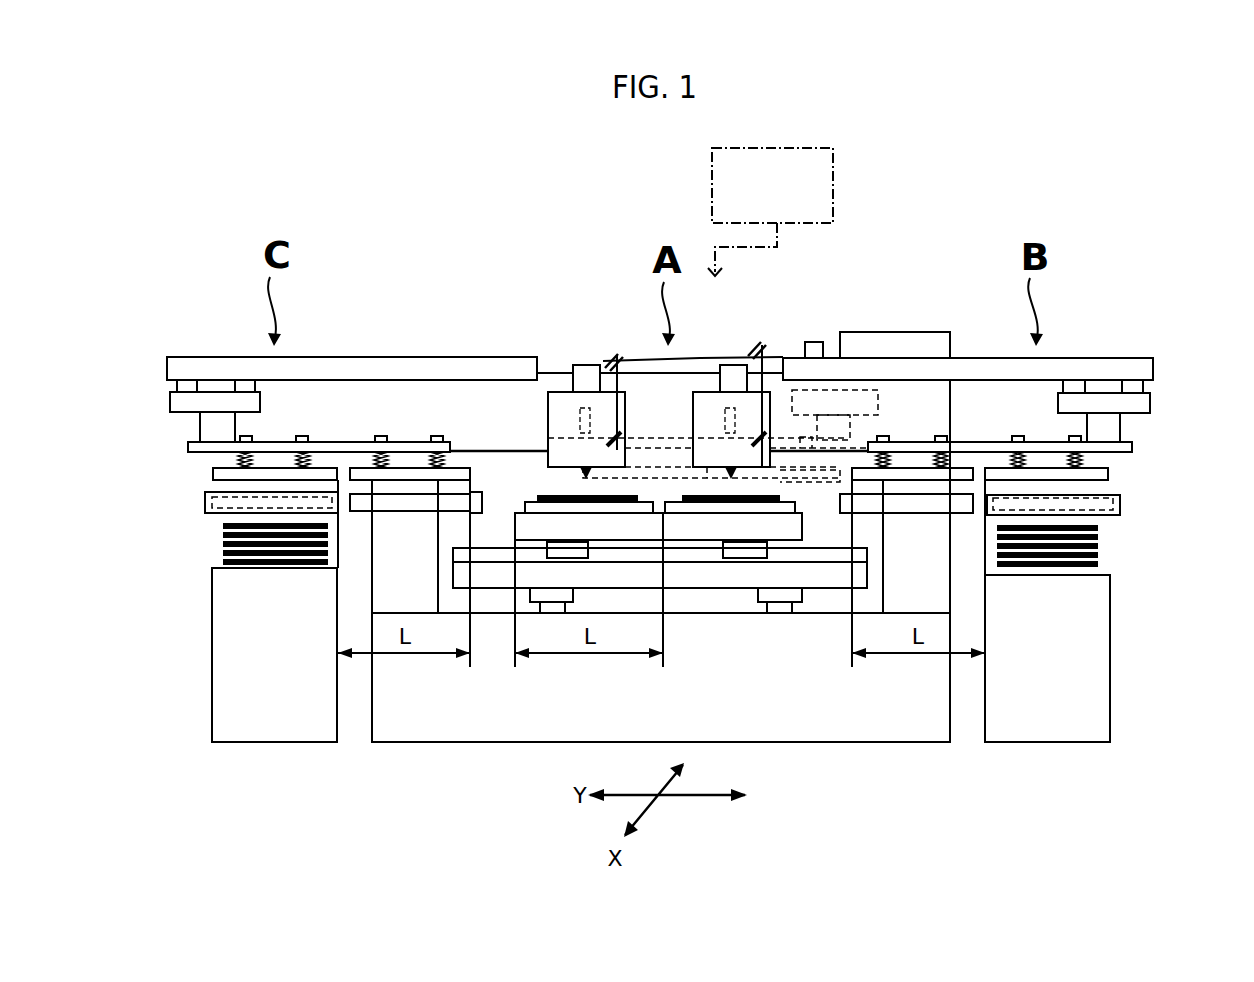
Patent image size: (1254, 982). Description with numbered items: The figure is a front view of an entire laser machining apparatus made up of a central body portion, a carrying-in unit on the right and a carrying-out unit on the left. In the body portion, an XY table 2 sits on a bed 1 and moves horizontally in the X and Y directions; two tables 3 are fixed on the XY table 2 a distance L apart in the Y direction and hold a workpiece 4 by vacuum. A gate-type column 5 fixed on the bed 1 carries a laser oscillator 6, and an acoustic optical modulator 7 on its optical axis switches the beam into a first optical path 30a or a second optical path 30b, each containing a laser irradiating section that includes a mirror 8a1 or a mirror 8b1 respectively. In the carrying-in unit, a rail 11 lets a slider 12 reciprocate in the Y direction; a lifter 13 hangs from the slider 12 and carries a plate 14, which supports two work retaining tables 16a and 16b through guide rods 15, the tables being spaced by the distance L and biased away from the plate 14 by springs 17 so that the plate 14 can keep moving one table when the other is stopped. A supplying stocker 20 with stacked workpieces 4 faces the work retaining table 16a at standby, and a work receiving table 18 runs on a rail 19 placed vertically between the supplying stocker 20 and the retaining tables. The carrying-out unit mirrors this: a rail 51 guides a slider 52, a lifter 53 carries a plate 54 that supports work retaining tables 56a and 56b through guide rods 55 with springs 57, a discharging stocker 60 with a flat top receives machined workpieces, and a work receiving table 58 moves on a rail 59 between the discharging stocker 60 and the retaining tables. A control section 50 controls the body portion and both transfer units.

The bed 1 is at (533, 744).
The XY table 2 is at (798, 556).
The table 3 is at (524, 509).
The workpiece 4 is at (785, 492).
The gate-type column 5 is at (519, 397).
The laser oscillator 6 is at (900, 332).
The acoustic optical modulator 7 is at (816, 342).
The mirror 8a1 is at (611, 360).
The mirror 8b1 is at (762, 346).
The rail 11 is at (1140, 358).
The slider 12 is at (1150, 404).
The lifter 13 is at (1120, 430).
The plate 14 is at (1133, 447).
The guide rod 15 is at (1016, 436).
The work retaining table 16a is at (1109, 475).
The work retaining table 16b is at (912, 468).
The spring 17 is at (1086, 460).
The work receiving table 18 is at (935, 515).
The rail 19 is at (1121, 505).
The supplying stocker 20 is at (1110, 652).
The first optical path 30a is at (690, 361).
The second optical path 30b is at (754, 358).
The control section 50 is at (837, 188).
The rail 51 is at (209, 356).
The slider 52 is at (169, 400).
The lifter 53 is at (199, 427).
The plate 54 is at (187, 446).
The guide rod 55 is at (441, 436).
The work retaining table 56a is at (212, 474).
The work retaining table 56b is at (413, 470).
The spring 57 is at (456, 458).
The work receiving table 58 is at (420, 515).
The rail 59 is at (204, 503).
The discharging stocker 60 is at (220, 650).